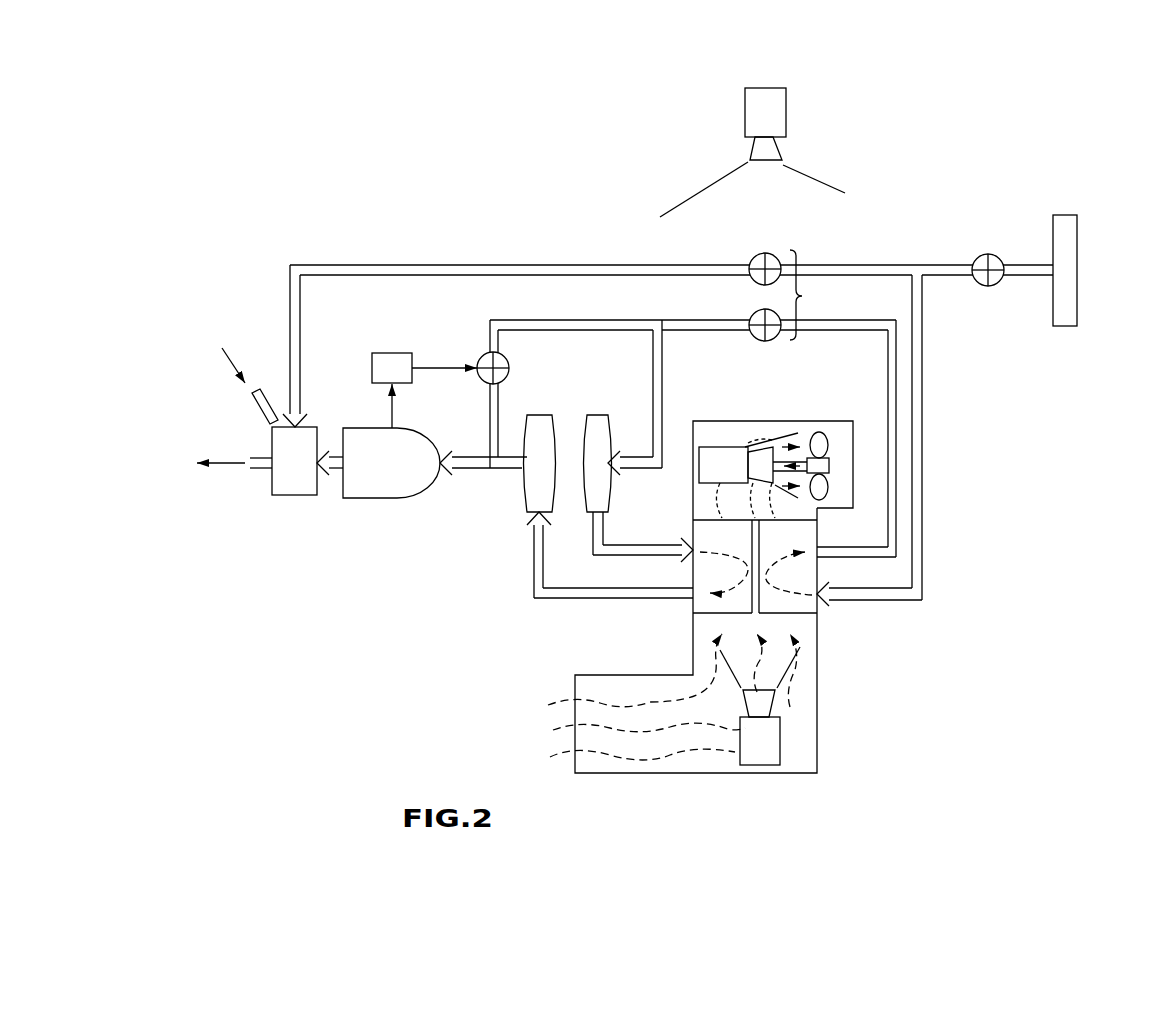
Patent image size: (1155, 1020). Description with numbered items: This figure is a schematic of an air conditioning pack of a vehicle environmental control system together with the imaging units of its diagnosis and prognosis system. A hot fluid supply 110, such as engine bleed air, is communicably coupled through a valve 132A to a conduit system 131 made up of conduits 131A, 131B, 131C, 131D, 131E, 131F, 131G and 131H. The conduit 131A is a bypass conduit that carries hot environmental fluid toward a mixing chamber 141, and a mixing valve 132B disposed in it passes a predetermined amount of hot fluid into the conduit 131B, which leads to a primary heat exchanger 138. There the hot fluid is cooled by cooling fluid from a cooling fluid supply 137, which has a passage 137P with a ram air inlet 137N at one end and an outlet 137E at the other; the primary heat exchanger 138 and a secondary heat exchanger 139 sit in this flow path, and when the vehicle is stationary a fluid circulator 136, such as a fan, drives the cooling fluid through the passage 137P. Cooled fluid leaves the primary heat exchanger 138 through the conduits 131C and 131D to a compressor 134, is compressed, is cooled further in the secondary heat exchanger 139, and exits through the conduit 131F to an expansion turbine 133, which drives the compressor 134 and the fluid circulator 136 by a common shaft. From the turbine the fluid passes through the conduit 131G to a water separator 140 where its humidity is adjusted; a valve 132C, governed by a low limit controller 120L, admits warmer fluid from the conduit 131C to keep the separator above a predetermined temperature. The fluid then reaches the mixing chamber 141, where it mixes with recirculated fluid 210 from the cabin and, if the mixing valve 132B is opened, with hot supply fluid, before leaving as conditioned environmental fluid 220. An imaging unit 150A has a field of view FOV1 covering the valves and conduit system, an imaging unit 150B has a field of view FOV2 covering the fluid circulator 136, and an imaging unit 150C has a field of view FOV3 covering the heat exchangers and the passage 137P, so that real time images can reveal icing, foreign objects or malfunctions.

The hot fluid supply 110 is at (1063, 320).
The low limit controller 120L is at (392, 360).
The conduit system 131 is at (505, 250).
The conduit 131A is at (665, 270).
The conduit 131B is at (920, 446).
The conduit 131C is at (898, 398).
The conduit 131D is at (657, 377).
The conduit 131E is at (618, 557).
The conduit 131F is at (563, 600).
The conduit 131G is at (491, 470).
The conduit 131H is at (336, 470).
The valve 132A is at (980, 257).
The mixing valve 132B is at (797, 295).
The valve 132C is at (503, 362).
The expansion turbine 133 is at (535, 417).
The compressor 134 is at (593, 418).
The fluid circulator 136 is at (828, 510).
The cooling fluid supply 137 is at (673, 775).
The outlet 137E is at (862, 464).
The ram air inlet 137N is at (567, 719).
The passage 137P is at (810, 642).
The primary heat exchanger 138 is at (802, 607).
The secondary heat exchanger 139 is at (702, 610).
The water separator 140 is at (357, 492).
The mixing chamber 141 is at (295, 490).
The imaging unit 150A is at (780, 113).
The imaging unit 150B is at (710, 483).
The imaging unit 150C is at (757, 757).
The recirculated fluid 210 is at (233, 358).
The conditioned environmental fluid 220 is at (233, 468).
The field of view FOV1 is at (705, 187).
The field of view FOV2 is at (798, 445).
The field of view FOV3 is at (797, 662).